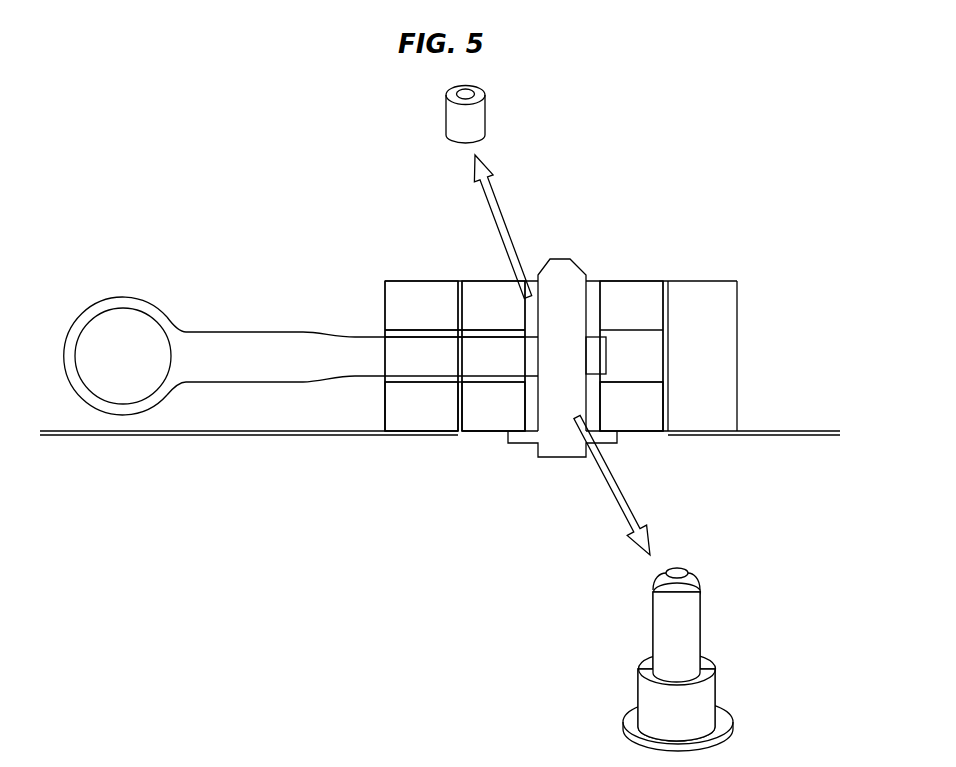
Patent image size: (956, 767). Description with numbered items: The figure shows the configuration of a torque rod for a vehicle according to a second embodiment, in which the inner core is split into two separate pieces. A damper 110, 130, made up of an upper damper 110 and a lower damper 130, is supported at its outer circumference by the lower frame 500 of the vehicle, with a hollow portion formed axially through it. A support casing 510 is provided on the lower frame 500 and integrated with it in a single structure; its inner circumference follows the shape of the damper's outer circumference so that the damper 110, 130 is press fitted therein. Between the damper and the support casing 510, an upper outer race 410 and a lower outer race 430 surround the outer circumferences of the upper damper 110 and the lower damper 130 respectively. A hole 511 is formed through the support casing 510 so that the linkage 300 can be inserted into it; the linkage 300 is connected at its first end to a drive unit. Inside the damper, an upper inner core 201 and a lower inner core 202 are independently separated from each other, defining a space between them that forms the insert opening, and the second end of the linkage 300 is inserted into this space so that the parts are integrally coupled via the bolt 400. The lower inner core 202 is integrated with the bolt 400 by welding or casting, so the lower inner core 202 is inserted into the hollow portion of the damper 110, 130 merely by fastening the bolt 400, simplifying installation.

The upper damper 110 is at (485, 298).
The lower damper 130 is at (493, 413).
The upper inner core 201 is at (480, 120).
The lower inner core 202 is at (533, 397).
The linkage 300 is at (268, 352).
The bolt 400 is at (565, 246).
The upper outer race 410 is at (447, 287).
The lower outer race 430 is at (458, 403).
The lower frame 500 is at (791, 436).
The support casing 510 is at (726, 335).
The hole 511 is at (417, 335).